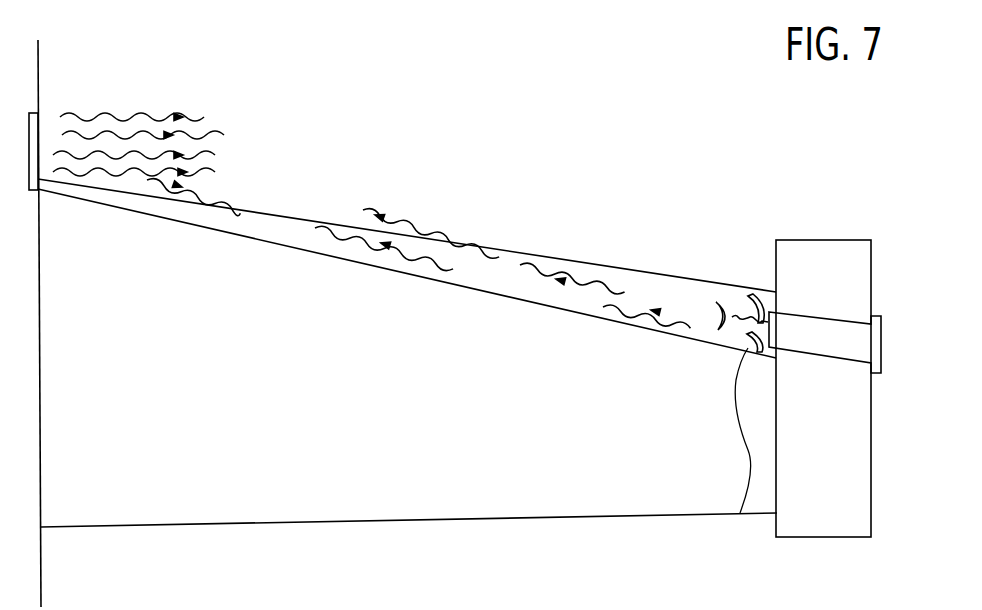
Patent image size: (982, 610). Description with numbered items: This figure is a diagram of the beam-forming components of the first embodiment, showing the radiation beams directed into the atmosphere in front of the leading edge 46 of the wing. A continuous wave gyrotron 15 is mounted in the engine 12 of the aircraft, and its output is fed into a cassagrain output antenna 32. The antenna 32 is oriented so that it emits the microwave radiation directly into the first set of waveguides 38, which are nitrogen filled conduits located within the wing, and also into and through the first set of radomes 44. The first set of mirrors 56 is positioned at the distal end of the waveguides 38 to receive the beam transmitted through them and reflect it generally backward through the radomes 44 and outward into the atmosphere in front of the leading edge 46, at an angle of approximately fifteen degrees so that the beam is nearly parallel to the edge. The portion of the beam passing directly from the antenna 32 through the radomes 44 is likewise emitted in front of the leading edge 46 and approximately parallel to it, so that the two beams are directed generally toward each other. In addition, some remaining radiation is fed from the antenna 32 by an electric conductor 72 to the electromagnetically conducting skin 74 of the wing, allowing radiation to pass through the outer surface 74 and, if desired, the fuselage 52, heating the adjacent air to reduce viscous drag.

The engine 12 is at (830, 248).
The continuous wave gyrotron 15 is at (881, 338).
The cassagrain output antenna 32 is at (758, 293).
The first set of waveguides 38 is at (358, 260).
The first set of radomes 44 is at (40, 123).
The leading edge 46 is at (539, 170).
The fuselage 52 is at (41, 422).
The first set of mirrors 56 is at (38, 182).
The electric conductor 72 is at (737, 415).
The electromagnetically conducting skin 74 is at (695, 515).